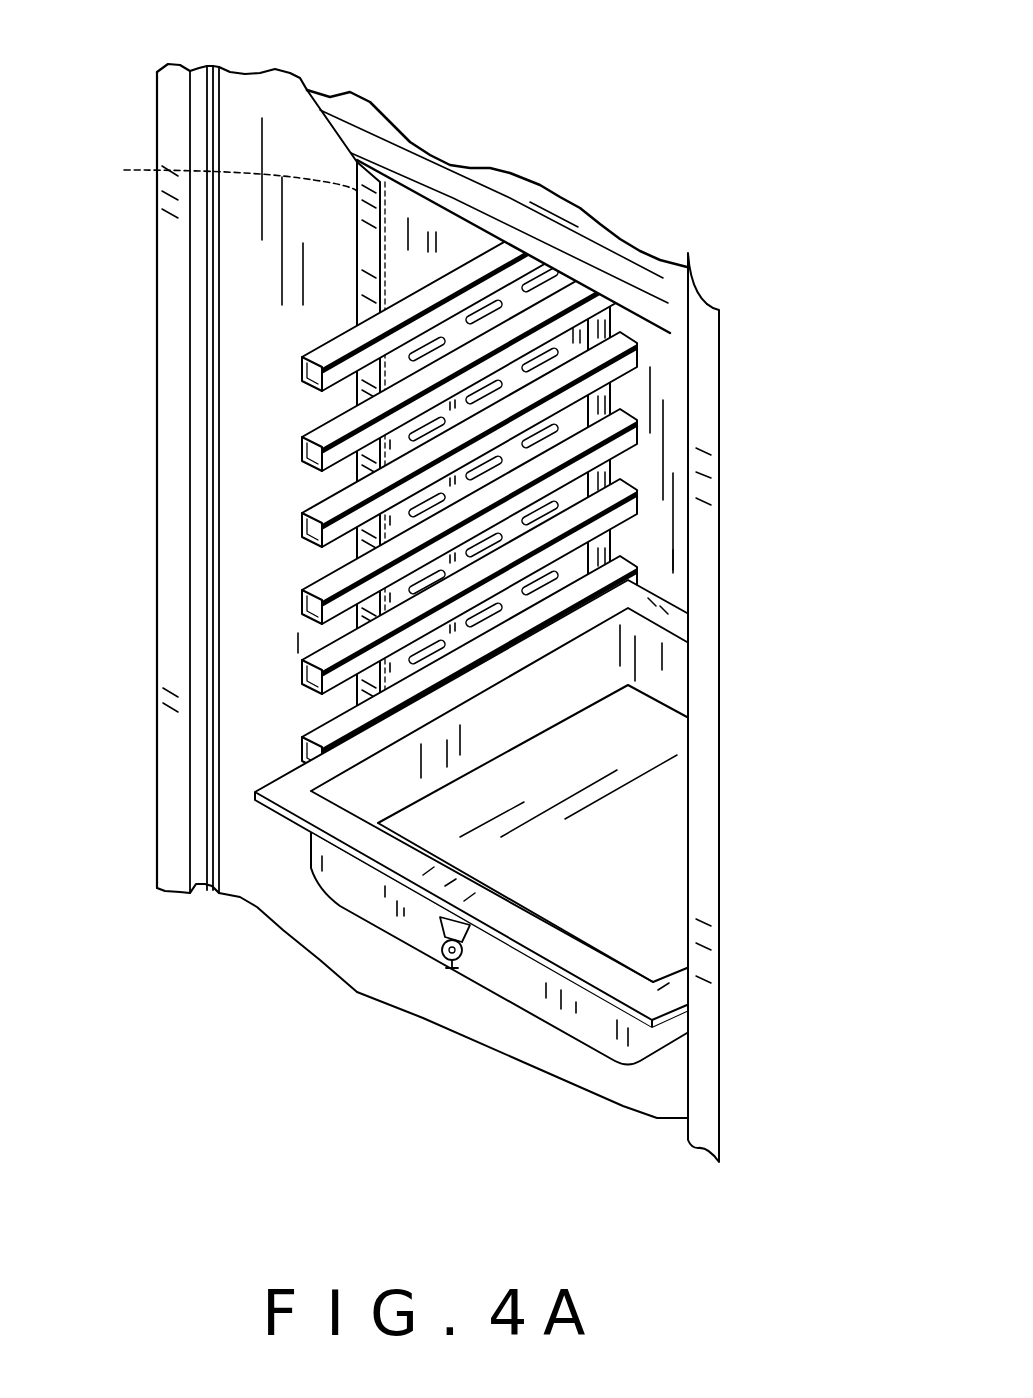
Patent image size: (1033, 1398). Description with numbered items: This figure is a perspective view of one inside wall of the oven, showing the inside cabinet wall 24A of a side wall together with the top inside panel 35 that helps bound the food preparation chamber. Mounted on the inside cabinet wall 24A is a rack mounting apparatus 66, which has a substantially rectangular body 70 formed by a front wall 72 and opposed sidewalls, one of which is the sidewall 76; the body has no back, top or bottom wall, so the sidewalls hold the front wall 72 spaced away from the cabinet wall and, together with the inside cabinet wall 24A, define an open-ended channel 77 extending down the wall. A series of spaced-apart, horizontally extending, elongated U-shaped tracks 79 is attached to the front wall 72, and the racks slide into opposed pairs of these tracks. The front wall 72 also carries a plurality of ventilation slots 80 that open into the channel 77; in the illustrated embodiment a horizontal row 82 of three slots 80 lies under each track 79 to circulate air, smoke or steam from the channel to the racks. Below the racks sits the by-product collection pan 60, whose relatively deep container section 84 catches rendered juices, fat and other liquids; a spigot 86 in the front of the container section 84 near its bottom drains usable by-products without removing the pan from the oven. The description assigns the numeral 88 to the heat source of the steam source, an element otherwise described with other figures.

The inside cabinet wall 24A is at (290, 96).
The top inside panel 35 is at (490, 182).
The open-ended channel 77 is at (222, 173).
The front wall 72 is at (405, 234).
The rack mounting apparatus 66 is at (386, 292).
The body 70 is at (360, 390).
The sidewall 76 is at (357, 462).
The U-shaped track 79 is at (640, 356).
The ventilation slot 80 is at (505, 300).
The horizontal row 82 is at (593, 308).
The by-product collection pan 60 is at (338, 896).
The spigot 86 is at (443, 950).
The heat source 88 is at (543, 938).
The container section 84 is at (573, 1043).